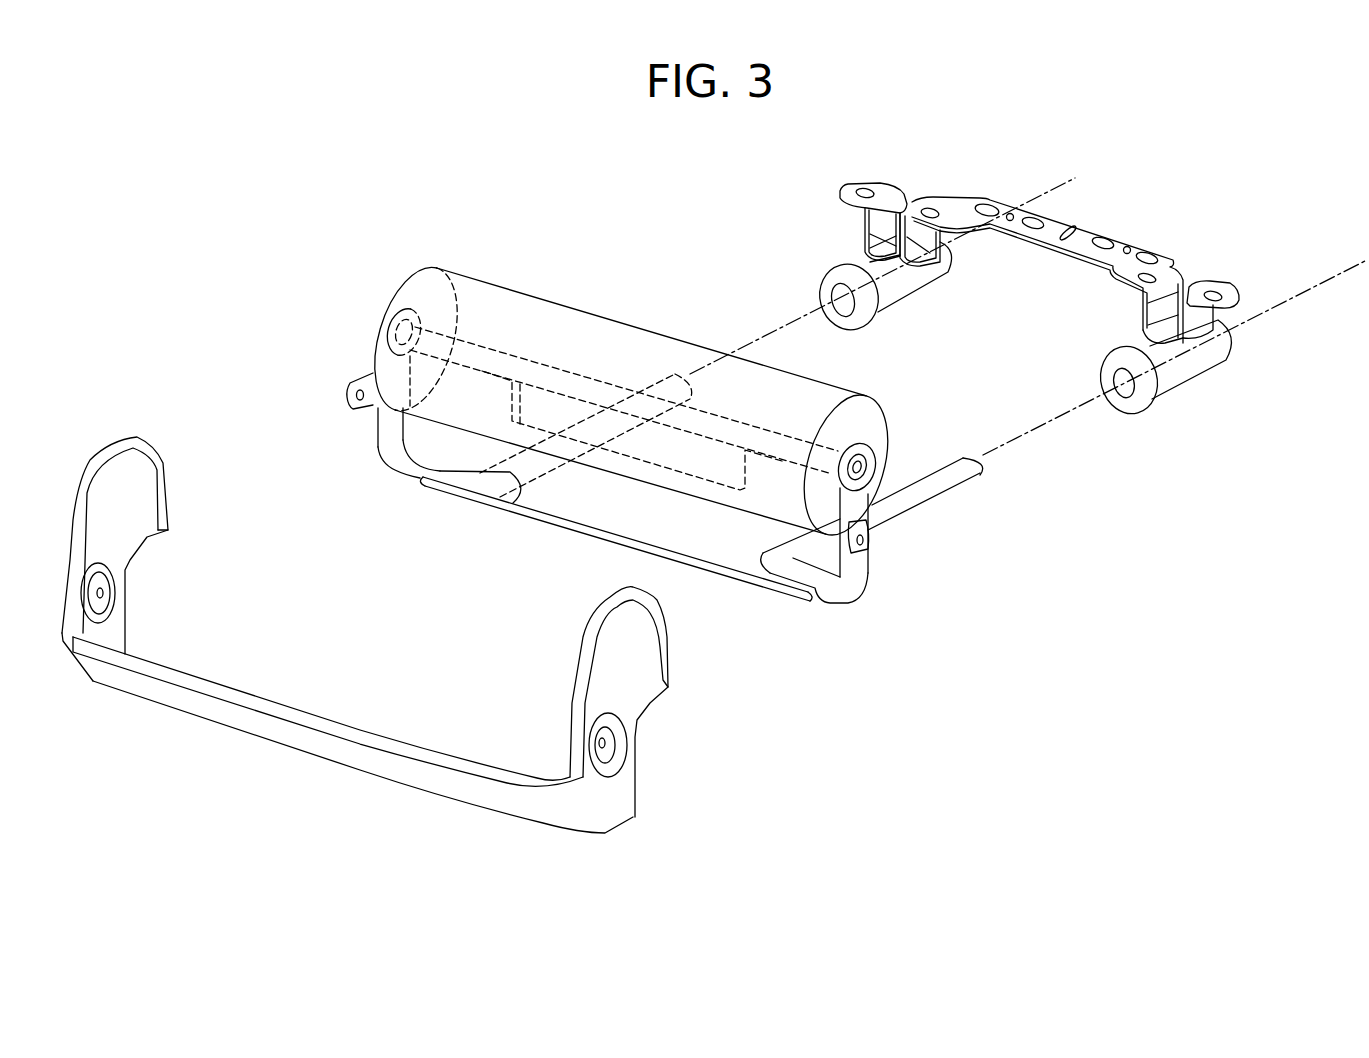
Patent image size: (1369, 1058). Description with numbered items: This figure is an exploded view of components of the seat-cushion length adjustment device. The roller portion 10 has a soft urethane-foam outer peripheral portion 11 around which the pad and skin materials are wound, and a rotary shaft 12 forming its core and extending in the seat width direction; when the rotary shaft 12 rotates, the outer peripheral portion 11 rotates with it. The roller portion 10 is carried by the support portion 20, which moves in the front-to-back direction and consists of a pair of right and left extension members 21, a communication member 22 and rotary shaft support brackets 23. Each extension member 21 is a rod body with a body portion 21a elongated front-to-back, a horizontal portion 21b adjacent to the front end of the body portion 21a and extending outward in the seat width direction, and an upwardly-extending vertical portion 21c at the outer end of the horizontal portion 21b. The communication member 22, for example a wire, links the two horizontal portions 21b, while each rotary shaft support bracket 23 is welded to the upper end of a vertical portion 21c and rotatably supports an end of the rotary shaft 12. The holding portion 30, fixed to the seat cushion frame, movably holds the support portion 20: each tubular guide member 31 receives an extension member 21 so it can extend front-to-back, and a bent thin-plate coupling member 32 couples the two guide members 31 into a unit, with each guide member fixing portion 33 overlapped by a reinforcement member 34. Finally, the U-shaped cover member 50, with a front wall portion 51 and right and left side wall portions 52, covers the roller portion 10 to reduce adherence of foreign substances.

The roller portion 10 is at (560, 296).
The outer peripheral portion 11 is at (653, 345).
The rotary shaft 12 is at (503, 350).
The support portion 20 is at (803, 617).
The extension member 21 is at (293, 508).
The body portion 21a is at (517, 478).
The horizontal portion 21b is at (415, 474).
The vertical portion 21c is at (390, 424).
The communication member 22 is at (578, 524).
The rotary shaft support bracket 23 is at (390, 308).
The holding portion 30 is at (1105, 215).
The guide member 31 is at (896, 283).
The coupling member 32 is at (1048, 232).
The guide member fixing portion 33 is at (875, 226).
The reinforcement member 34 is at (890, 247).
The cover member 50 is at (250, 776).
The front wall portion 51 is at (390, 768).
The side wall portion 52 is at (115, 482).